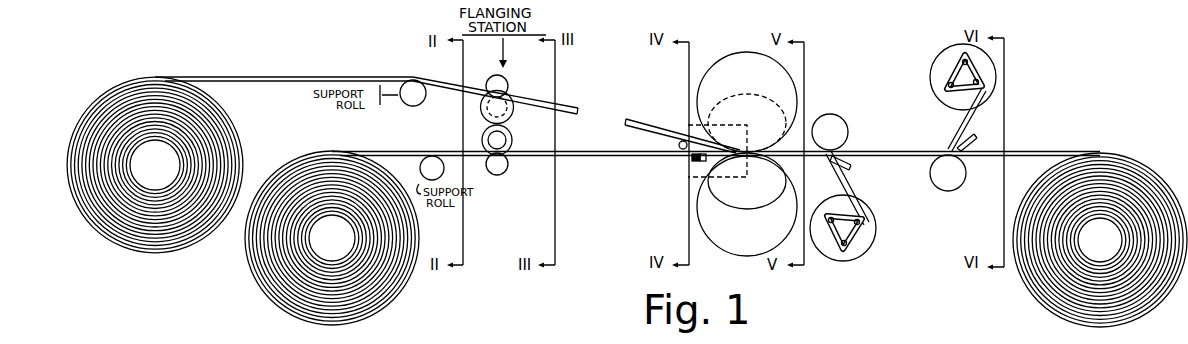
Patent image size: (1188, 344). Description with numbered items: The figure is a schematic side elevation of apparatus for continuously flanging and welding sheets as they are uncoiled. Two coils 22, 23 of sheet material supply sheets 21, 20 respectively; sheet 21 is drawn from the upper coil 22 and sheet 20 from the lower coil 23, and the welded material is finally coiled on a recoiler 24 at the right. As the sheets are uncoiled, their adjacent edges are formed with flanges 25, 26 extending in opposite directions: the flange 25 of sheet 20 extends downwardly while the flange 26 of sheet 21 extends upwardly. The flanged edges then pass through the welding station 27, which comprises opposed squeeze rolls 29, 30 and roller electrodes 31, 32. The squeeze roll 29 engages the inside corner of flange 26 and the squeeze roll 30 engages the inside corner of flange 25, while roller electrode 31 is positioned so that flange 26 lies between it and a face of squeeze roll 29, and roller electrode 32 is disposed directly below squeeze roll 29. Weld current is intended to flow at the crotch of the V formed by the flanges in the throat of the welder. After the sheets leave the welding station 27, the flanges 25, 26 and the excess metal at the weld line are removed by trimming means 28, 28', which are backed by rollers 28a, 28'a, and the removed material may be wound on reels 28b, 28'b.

The sheet 20 is at (425, 156).
The sheet 21 is at (400, 78).
The coil 22 is at (152, 71).
The coil 23 is at (329, 138).
The recoiler 24 is at (1110, 140).
The flange 25 is at (589, 160).
The flange 26 is at (576, 109).
The welding station 27 is at (758, 38).
The trimming means 28 is at (856, 188).
The roller 28a is at (858, 88).
The reel 28b is at (872, 228).
The trimming means 28' is at (976, 119).
The roller 28'a is at (928, 176).
The reel 28'b is at (938, 75).
The squeeze roll 29 is at (705, 125).
The squeeze roll 30 is at (760, 203).
The roller electrode 31 is at (760, 81).
The roller electrode 32 is at (762, 240).